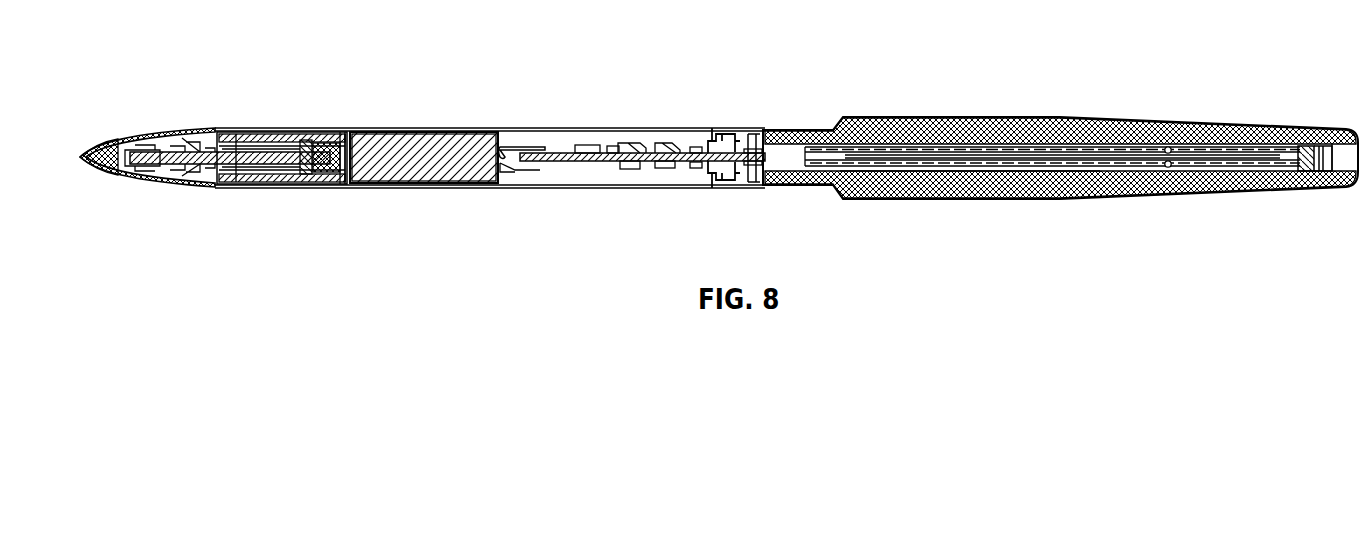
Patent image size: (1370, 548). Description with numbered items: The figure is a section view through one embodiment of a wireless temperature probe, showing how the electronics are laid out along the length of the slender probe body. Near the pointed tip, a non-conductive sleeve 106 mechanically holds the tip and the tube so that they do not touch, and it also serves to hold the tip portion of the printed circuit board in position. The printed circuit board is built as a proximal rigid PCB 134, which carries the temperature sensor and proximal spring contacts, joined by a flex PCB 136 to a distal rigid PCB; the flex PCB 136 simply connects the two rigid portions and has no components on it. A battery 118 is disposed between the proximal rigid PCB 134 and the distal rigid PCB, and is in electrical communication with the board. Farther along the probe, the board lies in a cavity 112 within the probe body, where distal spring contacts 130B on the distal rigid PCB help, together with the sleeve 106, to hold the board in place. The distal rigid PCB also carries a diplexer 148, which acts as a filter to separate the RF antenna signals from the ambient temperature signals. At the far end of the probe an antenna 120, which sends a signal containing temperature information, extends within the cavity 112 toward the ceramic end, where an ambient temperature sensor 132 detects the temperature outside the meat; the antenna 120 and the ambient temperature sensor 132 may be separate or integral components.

The sleeve 106 is at (282, 186).
The cavity 112 is at (550, 176).
The battery 118 is at (405, 152).
The antenna 120 is at (1200, 152).
The distal spring contacts 130B is at (714, 133).
The ambient temperature sensor 132 is at (1306, 186).
The proximal rigid PCB 134 is at (256, 152).
The flex PCB 136 is at (430, 186).
The diplexer 148 is at (748, 135).